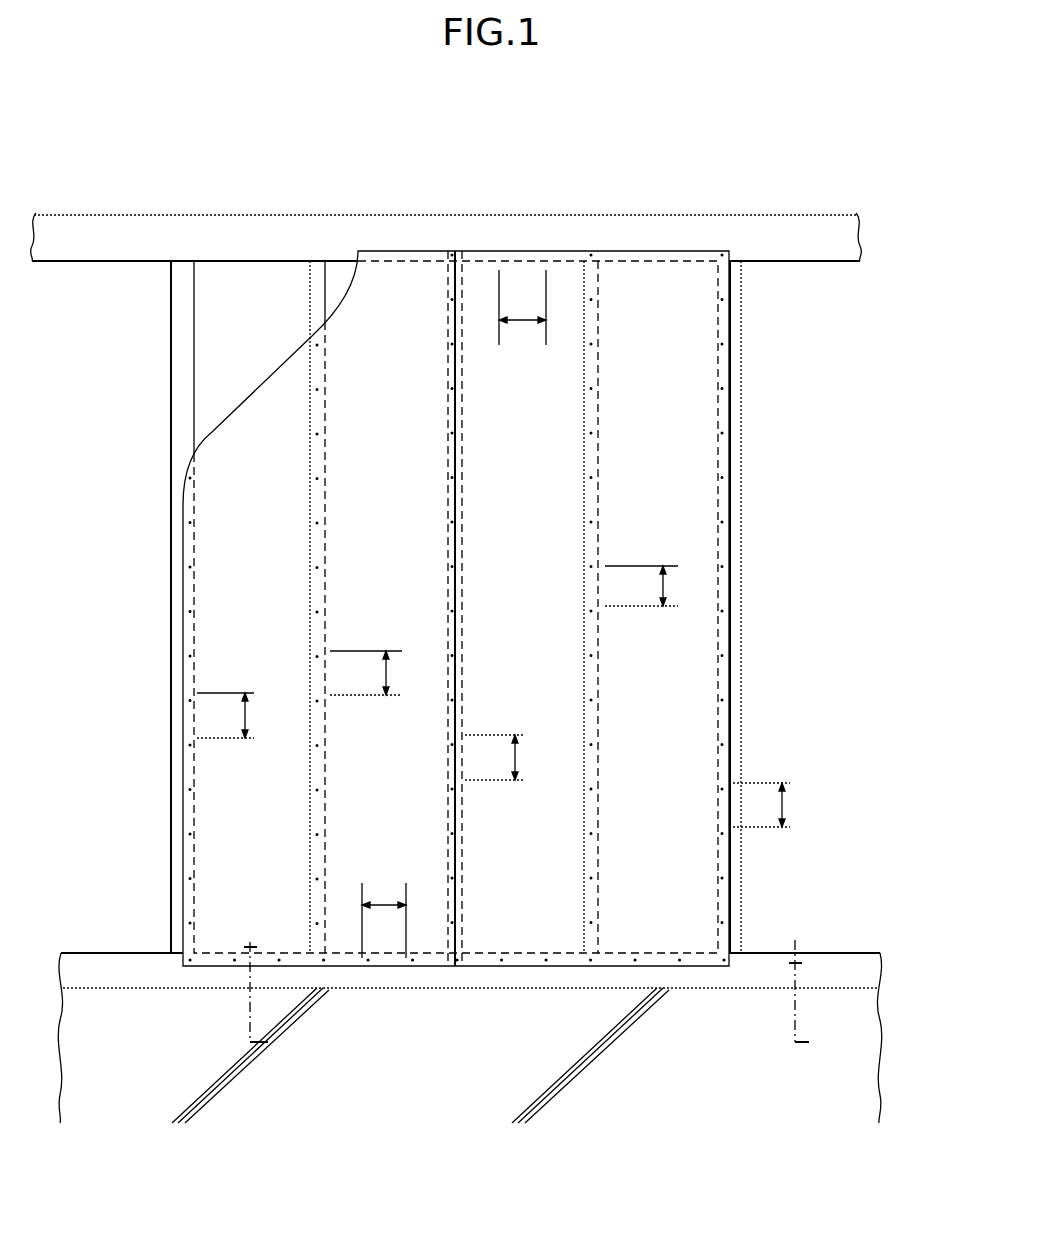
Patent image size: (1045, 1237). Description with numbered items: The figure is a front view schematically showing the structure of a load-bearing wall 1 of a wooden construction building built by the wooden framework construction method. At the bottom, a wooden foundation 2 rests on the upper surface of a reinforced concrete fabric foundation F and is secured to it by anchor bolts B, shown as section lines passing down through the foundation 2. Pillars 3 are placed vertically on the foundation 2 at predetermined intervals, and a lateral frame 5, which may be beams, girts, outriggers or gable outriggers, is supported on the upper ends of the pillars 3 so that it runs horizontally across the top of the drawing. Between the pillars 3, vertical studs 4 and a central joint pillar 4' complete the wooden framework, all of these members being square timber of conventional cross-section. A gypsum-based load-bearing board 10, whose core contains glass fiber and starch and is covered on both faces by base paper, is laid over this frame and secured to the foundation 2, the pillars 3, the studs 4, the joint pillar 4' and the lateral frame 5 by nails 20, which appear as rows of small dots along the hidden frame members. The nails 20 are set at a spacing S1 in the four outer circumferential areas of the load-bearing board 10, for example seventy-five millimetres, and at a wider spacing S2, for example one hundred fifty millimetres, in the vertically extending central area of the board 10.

The load-bearing wall 1 is at (786, 500).
The foundation 2 is at (868, 982).
The pillars 3 is at (172, 345).
The studs 4 is at (457, 607).
The joint pillar 4' is at (497, 608).
The lateral frame 5 is at (91, 215).
The load-bearing board 10 is at (232, 543).
The nails 20 is at (401, 256).
The anchor bolts B is at (250, 1003).
The fabric foundation F is at (848, 1080).
The spacing S1 is at (510, 614).
The spacing S2 is at (518, 631).